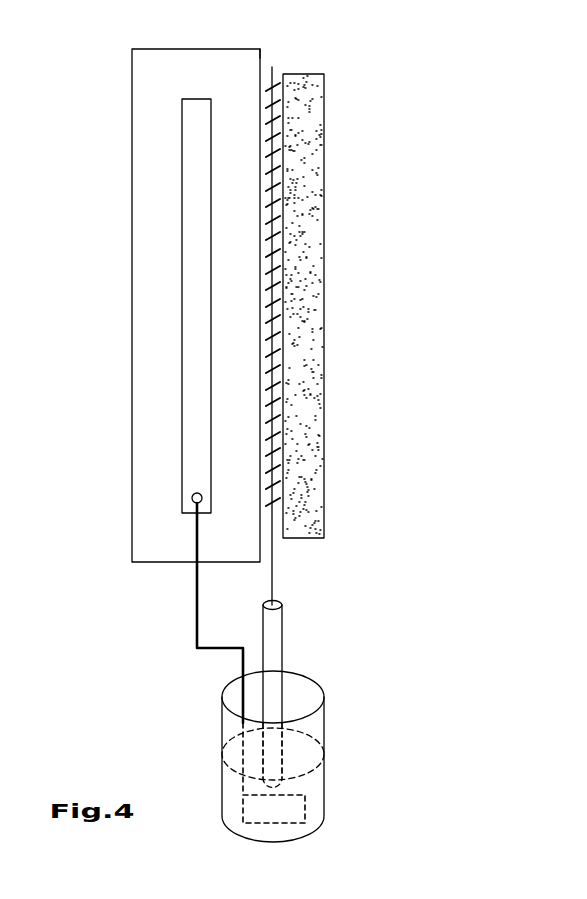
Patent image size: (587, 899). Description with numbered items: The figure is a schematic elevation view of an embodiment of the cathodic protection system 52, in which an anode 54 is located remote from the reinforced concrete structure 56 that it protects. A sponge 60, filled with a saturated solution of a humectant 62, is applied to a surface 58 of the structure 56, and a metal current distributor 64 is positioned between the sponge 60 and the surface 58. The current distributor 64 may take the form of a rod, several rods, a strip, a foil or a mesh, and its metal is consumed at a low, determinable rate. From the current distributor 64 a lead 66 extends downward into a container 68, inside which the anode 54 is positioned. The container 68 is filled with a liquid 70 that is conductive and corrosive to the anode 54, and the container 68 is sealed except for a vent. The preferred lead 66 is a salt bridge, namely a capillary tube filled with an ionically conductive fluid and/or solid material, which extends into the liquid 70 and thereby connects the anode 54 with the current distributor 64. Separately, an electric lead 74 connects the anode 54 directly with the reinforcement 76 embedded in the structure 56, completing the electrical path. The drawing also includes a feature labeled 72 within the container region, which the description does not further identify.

The cathodic protection system 52 is at (393, 387).
The anode 54 is at (305, 805).
The reinforced concrete structure 56 is at (158, 438).
The surface 58 is at (260, 58).
The sponge 60 is at (305, 255).
The humectant 62 is at (305, 172).
The metal current distributor 64 is at (277, 98).
The lead 66 is at (273, 640).
The container 68 is at (222, 765).
The liquid 70 is at (310, 785).
The tube end 72 is at (308, 765).
The electric lead 74 is at (197, 613).
The reinforcement 76 is at (200, 308).